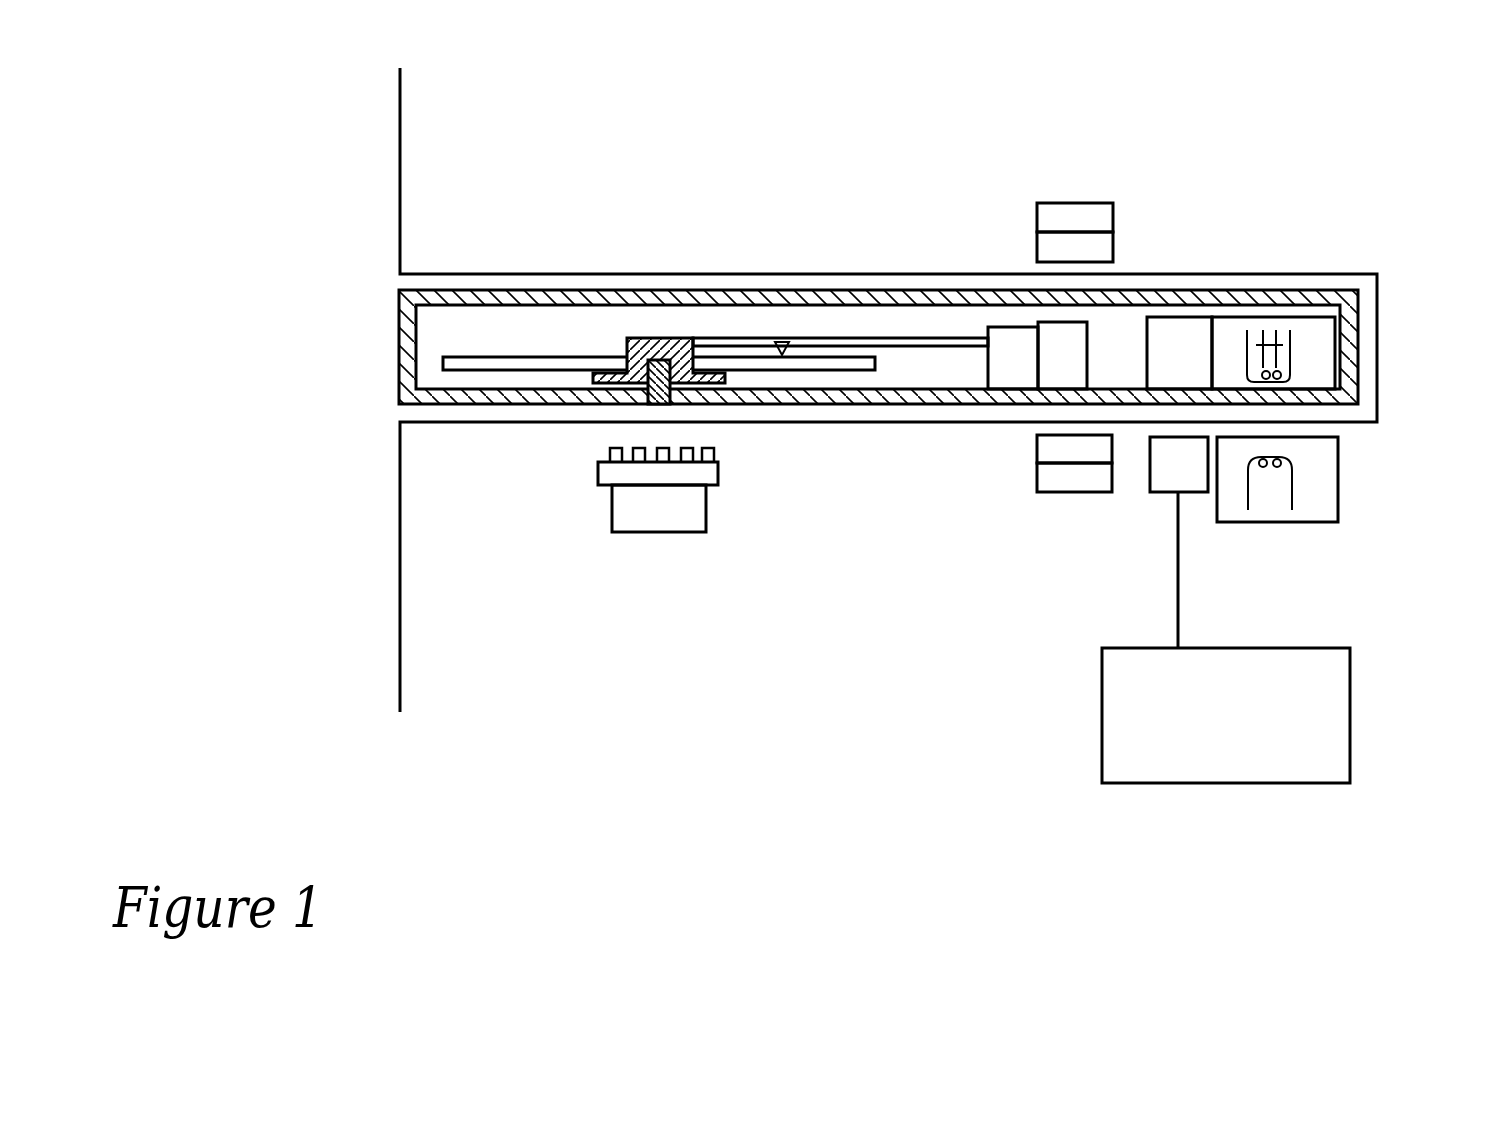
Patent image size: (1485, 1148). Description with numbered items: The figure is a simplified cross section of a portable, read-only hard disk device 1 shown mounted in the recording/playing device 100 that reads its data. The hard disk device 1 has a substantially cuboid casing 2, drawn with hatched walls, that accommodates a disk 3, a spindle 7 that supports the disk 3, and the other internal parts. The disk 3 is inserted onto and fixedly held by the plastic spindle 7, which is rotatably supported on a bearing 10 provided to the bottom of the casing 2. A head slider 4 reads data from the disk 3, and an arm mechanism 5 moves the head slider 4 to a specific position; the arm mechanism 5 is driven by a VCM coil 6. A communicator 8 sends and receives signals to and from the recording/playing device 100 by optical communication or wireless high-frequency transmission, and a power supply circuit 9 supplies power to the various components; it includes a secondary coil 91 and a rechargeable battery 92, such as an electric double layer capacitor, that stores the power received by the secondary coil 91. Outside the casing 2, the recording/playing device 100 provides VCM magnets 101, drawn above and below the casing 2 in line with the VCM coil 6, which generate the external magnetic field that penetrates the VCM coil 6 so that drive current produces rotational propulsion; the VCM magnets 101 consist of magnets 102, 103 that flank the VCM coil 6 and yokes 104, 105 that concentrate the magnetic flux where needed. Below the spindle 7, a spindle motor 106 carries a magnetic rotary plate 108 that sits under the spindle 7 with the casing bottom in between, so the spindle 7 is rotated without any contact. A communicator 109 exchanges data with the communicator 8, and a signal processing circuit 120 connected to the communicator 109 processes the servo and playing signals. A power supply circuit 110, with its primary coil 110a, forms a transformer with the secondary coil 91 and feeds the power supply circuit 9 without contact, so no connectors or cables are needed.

The hard disk device 1 is at (355, 298).
The casing 2 is at (398, 345).
The disk 3 is at (508, 356).
The head slider 4 is at (792, 347).
The arm mechanism 5 is at (996, 365).
The VCM coil 6 is at (1073, 372).
The spindle 7 is at (642, 338).
The communicator 8 is at (1156, 330).
The power supply circuit 9 is at (1278, 316).
The bearing 10 is at (684, 338).
The secondary coil 91 is at (1290, 375).
The rechargeable battery 92 is at (1290, 342).
The recording/playing device 100 is at (398, 577).
The VCM magnets 101 is at (1112, 192).
The magnet 102 is at (1037, 447).
The magnet 103 is at (1037, 250).
The yoke 104 is at (1037, 478).
The yoke 105 is at (1037, 212).
The spindle motor 106 is at (706, 520).
The magnetic rotary plate 108 is at (718, 472).
The communicator 109 is at (1158, 492).
The power supply circuit 110 is at (1305, 522).
The coil 110a is at (1292, 480).
The signal processing circuit 120 is at (1350, 712).